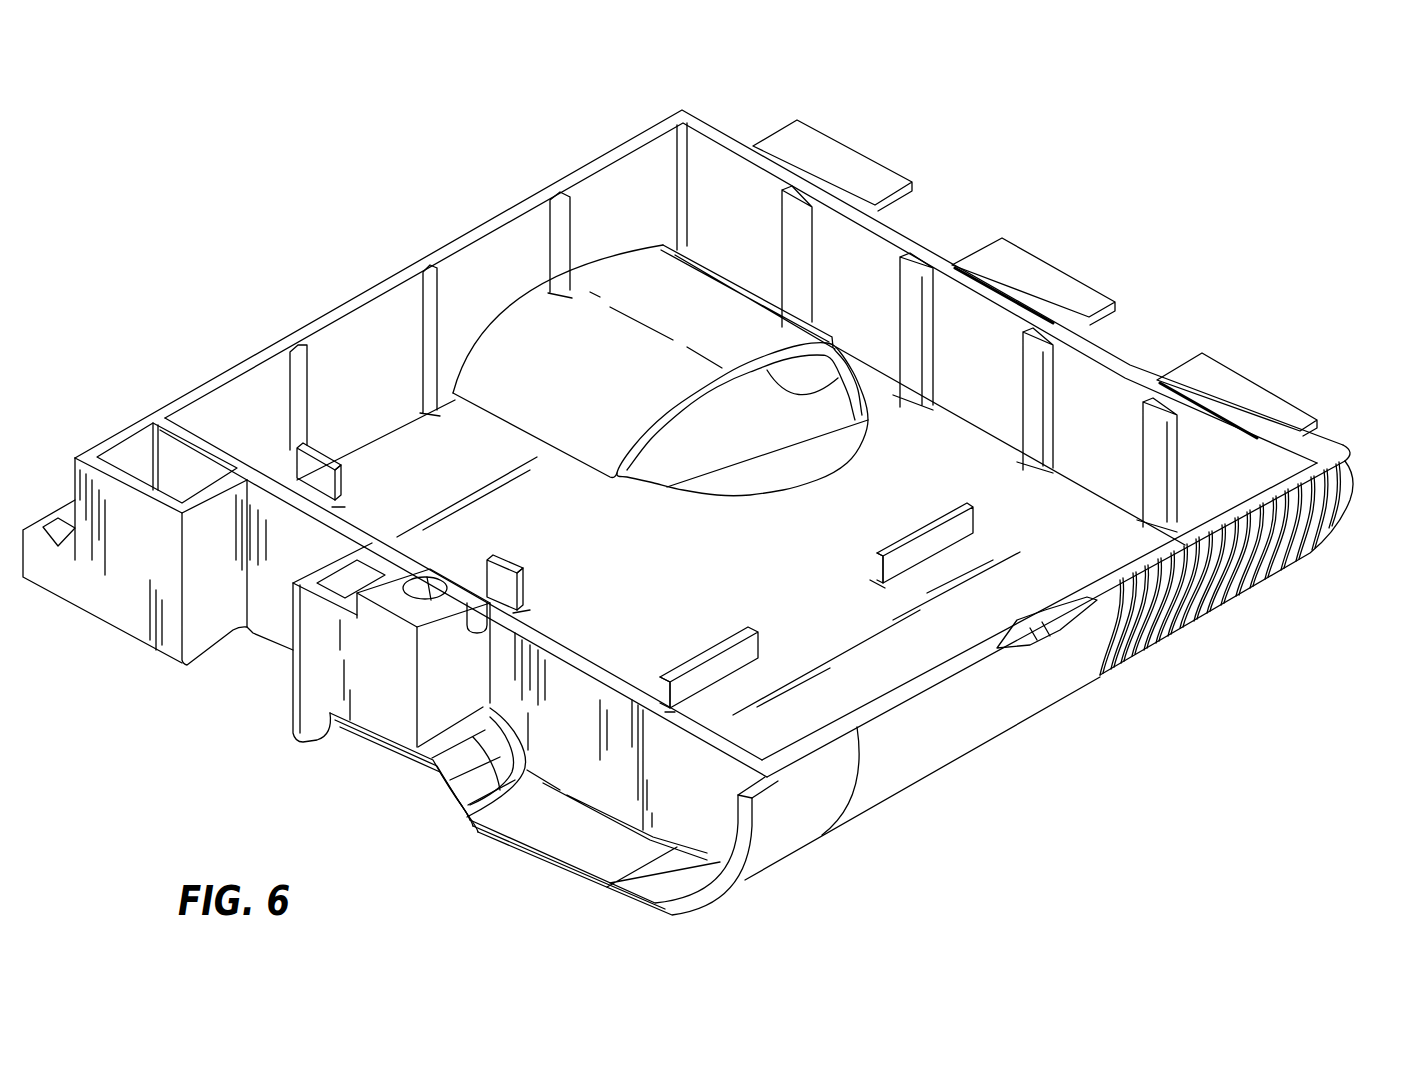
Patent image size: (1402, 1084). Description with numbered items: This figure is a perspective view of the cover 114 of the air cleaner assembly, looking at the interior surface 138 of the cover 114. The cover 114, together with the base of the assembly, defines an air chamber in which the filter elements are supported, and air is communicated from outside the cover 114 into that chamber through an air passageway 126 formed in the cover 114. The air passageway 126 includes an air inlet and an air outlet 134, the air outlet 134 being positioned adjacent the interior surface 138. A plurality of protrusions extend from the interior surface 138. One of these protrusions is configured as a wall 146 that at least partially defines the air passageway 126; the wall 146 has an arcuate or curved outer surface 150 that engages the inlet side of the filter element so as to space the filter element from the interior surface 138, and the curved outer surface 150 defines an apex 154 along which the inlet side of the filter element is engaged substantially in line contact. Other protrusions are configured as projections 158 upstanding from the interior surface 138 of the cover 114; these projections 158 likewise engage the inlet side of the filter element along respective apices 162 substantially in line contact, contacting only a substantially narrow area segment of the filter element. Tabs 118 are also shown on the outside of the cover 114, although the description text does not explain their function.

The cover 114 is at (1062, 799).
The mounting tabs 118 is at (872, 175).
The air passageway 126 is at (683, 440).
The air outlet 134 is at (868, 422).
The interior surface 138 is at (828, 534).
The wall 146 is at (600, 430).
The curved outer surface 150 is at (600, 366).
The apex 154 is at (645, 290).
The projections 158 is at (337, 495).
The apices 162 is at (318, 457).